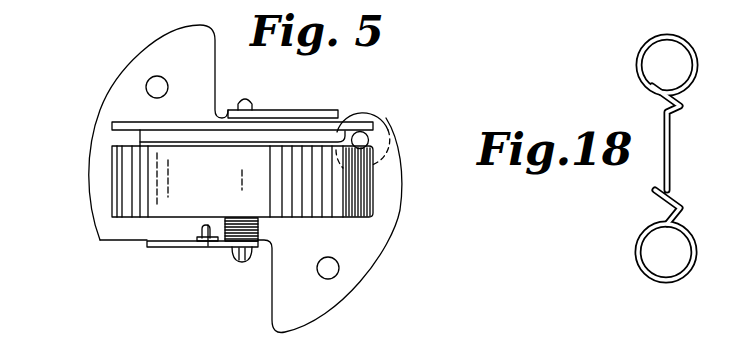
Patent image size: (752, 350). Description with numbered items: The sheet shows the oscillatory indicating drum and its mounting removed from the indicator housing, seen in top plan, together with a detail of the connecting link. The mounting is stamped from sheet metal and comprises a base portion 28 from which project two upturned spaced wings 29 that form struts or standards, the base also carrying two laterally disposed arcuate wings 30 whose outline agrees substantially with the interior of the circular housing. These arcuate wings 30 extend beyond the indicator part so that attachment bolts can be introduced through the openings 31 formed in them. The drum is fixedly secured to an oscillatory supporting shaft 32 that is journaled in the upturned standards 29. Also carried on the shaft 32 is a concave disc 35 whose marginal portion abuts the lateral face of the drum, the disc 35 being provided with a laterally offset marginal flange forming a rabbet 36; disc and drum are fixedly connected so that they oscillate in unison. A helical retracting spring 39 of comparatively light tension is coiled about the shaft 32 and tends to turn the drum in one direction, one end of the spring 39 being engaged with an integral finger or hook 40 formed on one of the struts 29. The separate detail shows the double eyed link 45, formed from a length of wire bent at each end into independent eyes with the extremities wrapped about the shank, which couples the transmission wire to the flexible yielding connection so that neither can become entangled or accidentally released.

In FIG. 5, the base portion 28 is at (142, 225).
In FIG. 5, the upturned spaced wings 29 is at (283, 116).
In FIG. 5, the arcuate wings 30 is at (245, 179).
In FIG. 5, the openings 31 is at (146, 84).
In FIG. 5, the oscillatory supporting shaft 32 is at (247, 110).
In FIG. 5, the concave disc 35 is at (187, 128).
In FIG. 5, the rabbet 36 is at (127, 135).
In FIG. 5, the helical retracting spring 39 is at (262, 228).
In FIG. 5, the integral finger or hook 40 is at (204, 240).
In FIG. 18, the double eyed link 45 is at (660, 183).